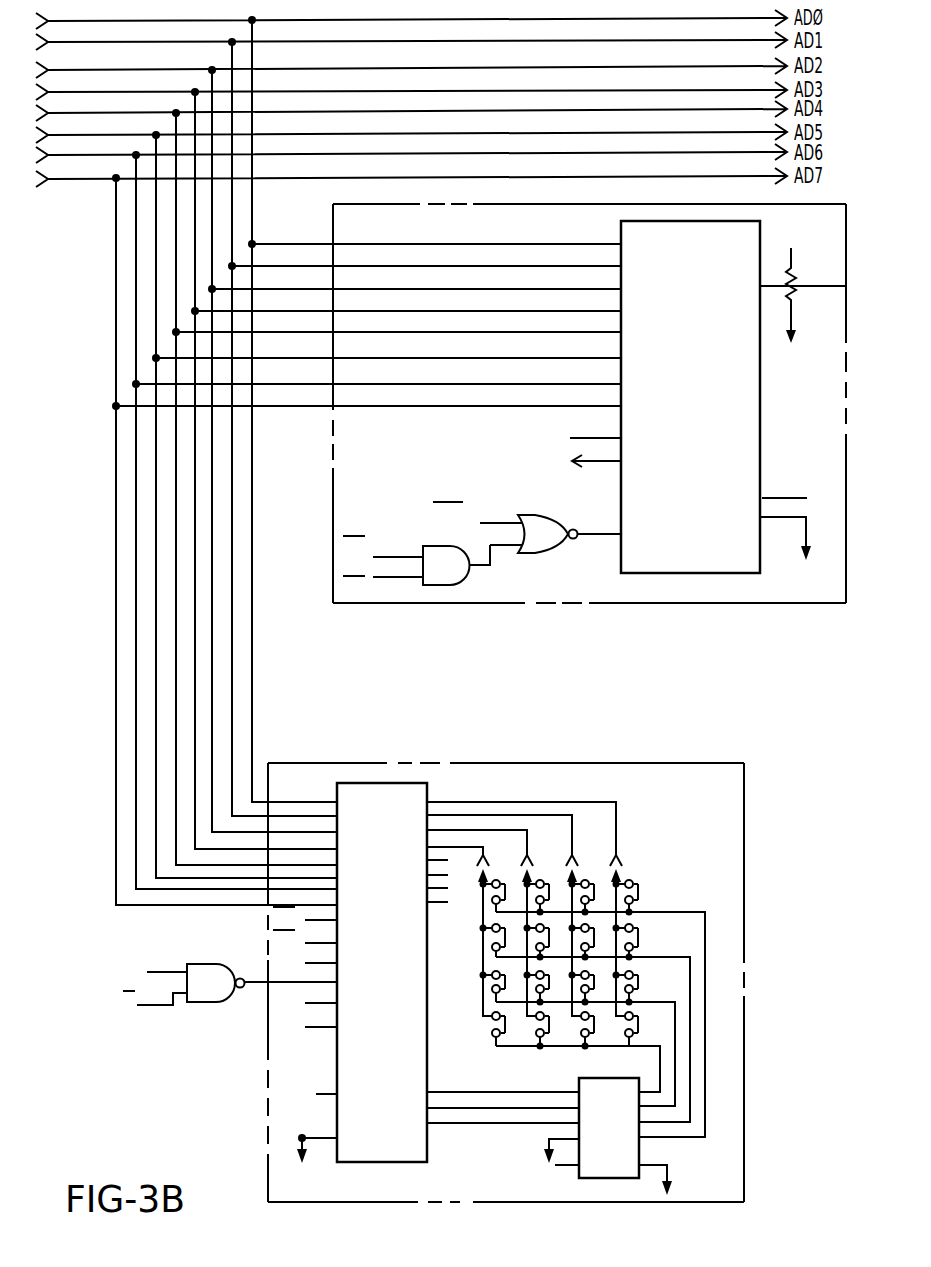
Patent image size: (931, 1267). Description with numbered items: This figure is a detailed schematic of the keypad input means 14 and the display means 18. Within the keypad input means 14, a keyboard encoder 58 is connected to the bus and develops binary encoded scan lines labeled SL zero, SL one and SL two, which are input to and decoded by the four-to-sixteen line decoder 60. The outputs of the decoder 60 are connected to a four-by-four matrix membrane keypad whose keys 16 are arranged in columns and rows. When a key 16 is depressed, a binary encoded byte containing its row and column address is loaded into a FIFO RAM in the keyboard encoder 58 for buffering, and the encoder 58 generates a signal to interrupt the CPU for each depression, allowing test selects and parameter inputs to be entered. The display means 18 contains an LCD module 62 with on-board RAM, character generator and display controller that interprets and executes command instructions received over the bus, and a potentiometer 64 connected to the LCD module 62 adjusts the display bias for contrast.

The keypad input means 14 is at (714, 872).
The keys or pads 16 is at (640, 878).
The display means 18 is at (808, 398).
The keyboard encoder 58 is at (350, 1053).
The 4:16 decoder 60 is at (597, 1172).
The LCD module 62 is at (756, 450).
The potentiometer 64 is at (846, 286).